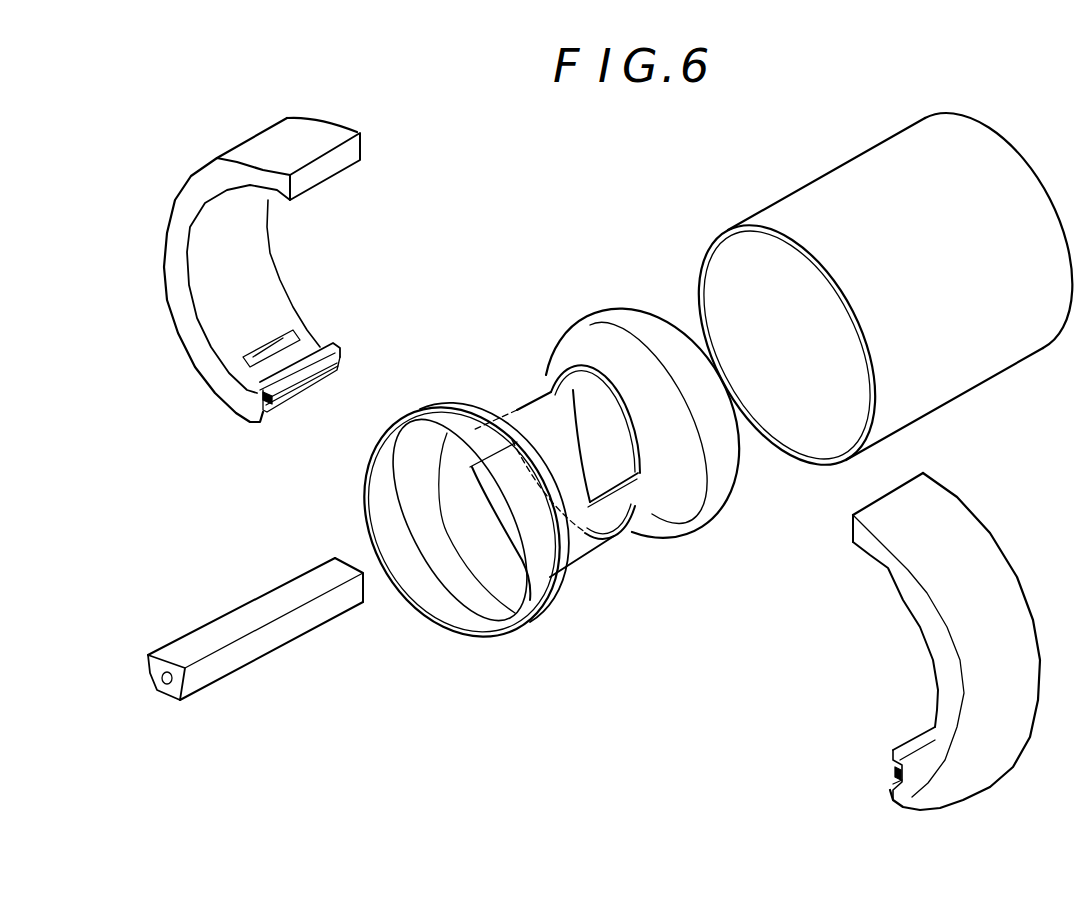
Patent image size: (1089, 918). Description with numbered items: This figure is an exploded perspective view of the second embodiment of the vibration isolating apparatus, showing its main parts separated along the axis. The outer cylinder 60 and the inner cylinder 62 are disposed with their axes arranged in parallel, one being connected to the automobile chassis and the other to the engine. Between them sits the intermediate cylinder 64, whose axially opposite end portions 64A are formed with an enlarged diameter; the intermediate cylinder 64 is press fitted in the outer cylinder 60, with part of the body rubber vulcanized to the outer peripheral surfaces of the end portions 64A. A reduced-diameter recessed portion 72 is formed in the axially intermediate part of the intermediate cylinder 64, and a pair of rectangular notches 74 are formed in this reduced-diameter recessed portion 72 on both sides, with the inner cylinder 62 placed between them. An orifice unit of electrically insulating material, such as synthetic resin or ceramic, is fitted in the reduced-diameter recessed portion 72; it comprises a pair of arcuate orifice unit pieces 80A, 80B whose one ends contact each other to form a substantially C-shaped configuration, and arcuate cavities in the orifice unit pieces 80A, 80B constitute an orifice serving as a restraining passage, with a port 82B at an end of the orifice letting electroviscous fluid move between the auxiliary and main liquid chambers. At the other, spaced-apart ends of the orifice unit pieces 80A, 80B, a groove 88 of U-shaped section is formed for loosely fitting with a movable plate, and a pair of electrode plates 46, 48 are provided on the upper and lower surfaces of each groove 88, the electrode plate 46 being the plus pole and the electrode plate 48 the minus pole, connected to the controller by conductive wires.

The outer cylinder 60 is at (975, 370).
The inner cylinder 62 is at (302, 627).
The intermediate cylinder 64 is at (561, 446).
The end portions 64A is at (720, 492).
The reduced-diameter recessed portion 72 is at (553, 368).
The rectangular notches 74 is at (630, 470).
The orifice unit piece 80A is at (284, 120).
The orifice unit piece 80B is at (980, 548).
The port 82B is at (283, 335).
The electrode plate 46 is at (338, 348).
The electrode plate 48 is at (338, 373).
The groove for loosely fitting with a movable plate 88 is at (273, 394).